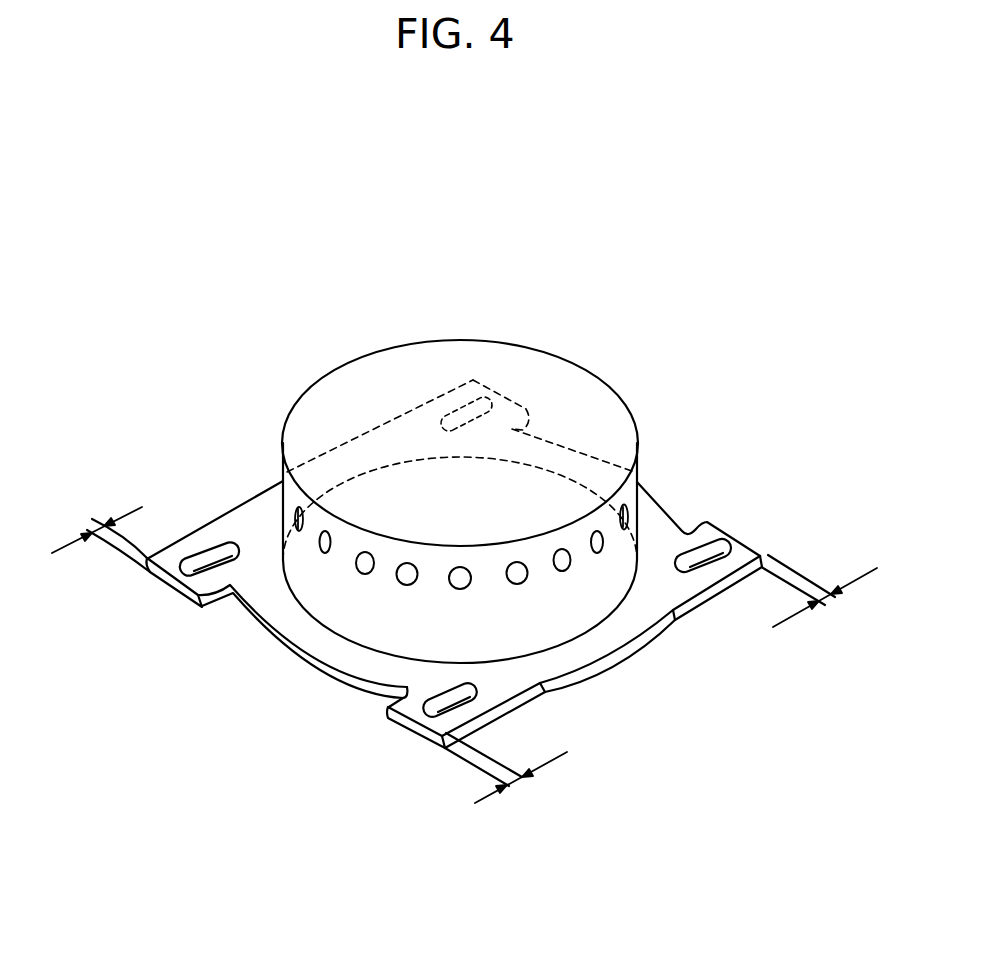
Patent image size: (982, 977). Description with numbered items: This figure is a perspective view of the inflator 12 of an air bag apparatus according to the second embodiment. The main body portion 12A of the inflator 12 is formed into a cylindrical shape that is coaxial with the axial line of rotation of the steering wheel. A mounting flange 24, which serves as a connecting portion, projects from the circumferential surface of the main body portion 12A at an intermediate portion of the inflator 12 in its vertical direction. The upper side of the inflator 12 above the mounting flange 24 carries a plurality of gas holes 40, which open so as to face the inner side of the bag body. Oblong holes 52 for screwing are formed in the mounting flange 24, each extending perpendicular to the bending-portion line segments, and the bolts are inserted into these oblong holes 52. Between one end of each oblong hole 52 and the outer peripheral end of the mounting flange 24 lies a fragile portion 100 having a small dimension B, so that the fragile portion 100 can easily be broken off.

The inflator 12 is at (653, 392).
The main body portion 12A is at (282, 487).
The mounting flange 24 is at (638, 650).
The gas holes 40 is at (362, 572).
The oblong holes 52 is at (510, 393).
The fragile portion 100 is at (590, 372).
The dimension B is at (94, 529).